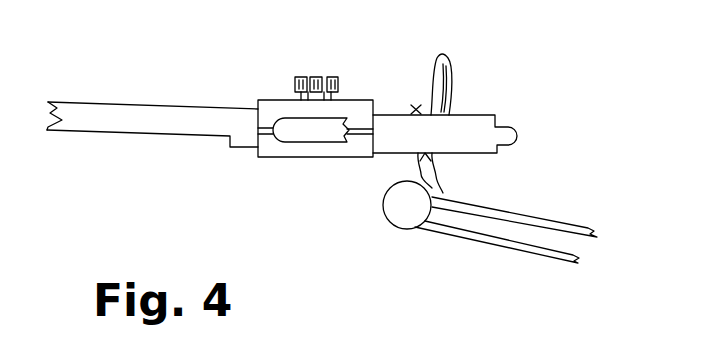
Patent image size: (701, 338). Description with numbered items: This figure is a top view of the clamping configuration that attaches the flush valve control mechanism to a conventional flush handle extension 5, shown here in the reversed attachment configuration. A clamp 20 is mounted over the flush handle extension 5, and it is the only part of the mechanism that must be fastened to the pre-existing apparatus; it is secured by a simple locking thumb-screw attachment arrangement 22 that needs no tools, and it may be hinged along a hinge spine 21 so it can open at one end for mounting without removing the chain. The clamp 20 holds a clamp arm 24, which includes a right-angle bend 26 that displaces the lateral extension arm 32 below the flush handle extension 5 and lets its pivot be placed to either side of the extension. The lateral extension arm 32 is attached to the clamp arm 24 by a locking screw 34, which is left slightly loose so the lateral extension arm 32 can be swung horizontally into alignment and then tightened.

The flush handle extension 5 is at (217, 109).
The clamp 20 is at (272, 158).
The hinge spine 21 is at (310, 136).
The locking thumb-screw attachment arrangement 22 is at (298, 77).
The clamp arm 24 is at (412, 108).
The right-angle bend 26 is at (452, 58).
The lateral extension arm 32 is at (500, 248).
The locking screw 34 is at (383, 207).